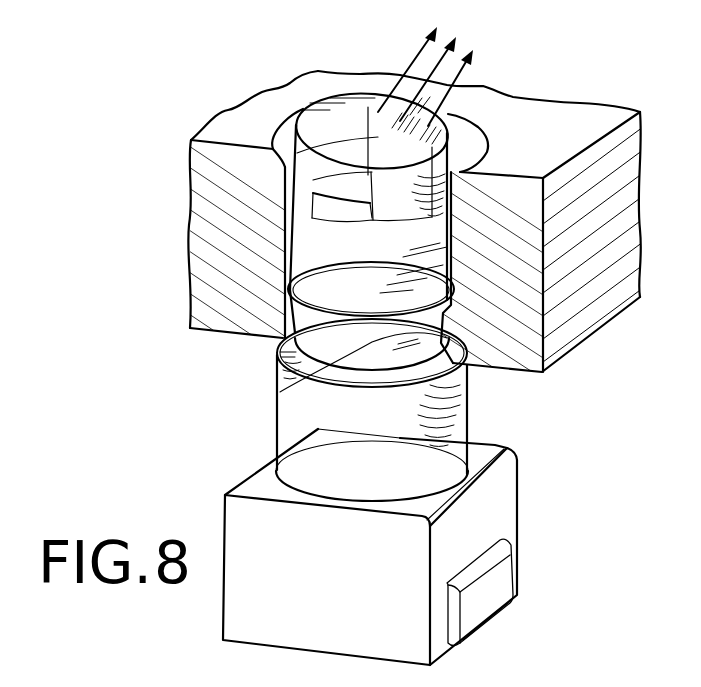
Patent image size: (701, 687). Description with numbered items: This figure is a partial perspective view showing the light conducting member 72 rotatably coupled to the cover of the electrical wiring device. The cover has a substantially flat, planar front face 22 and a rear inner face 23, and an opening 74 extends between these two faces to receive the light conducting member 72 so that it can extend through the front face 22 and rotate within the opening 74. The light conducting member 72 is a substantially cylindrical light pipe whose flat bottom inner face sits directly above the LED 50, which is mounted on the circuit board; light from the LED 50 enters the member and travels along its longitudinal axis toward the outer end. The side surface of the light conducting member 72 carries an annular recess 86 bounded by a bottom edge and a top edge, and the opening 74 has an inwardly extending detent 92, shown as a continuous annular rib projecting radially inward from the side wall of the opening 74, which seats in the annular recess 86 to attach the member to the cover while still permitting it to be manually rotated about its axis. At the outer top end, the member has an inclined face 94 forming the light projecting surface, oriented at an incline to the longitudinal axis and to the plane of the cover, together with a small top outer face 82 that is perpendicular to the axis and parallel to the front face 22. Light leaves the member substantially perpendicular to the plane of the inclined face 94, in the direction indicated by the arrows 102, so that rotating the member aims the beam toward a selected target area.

The front face 22 is at (240, 124).
The rear inner face 23 is at (207, 336).
The LED 50 is at (518, 503).
The light conducting member 72 is at (452, 131).
The opening 74 is at (395, 110).
The top outer face 82 is at (320, 104).
The annular recess 86 is at (467, 423).
The detent 92 is at (310, 380).
The inclined face 94 is at (432, 114).
The arrows 102 is at (419, 53).